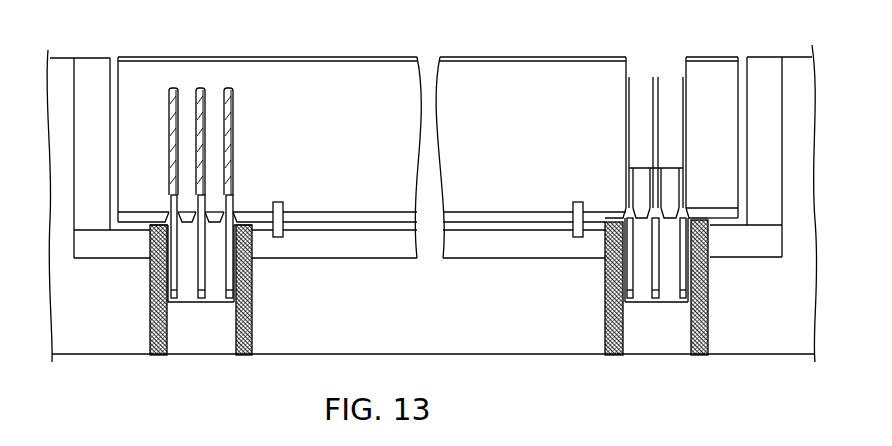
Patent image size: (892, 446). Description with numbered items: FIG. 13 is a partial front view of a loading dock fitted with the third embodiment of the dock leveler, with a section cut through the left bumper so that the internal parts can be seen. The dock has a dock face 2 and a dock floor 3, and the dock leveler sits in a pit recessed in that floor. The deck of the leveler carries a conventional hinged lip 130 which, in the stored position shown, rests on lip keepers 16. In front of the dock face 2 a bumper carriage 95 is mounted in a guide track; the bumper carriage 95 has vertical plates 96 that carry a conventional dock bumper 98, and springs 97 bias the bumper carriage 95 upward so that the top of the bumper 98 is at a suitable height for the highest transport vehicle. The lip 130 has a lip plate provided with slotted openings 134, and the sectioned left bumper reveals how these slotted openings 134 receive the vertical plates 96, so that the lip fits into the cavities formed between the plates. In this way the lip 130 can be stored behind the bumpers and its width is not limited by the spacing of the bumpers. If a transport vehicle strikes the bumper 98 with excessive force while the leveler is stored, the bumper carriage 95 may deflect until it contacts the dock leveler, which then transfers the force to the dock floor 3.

The dock face 2 is at (540, 352).
The dock floor 3 is at (58, 58).
The lip keepers 16 is at (282, 240).
The bumper carriage 95 is at (193, 305).
The vertical plates 96 is at (205, 293).
The springs 97 is at (252, 325).
The dock bumper 98 is at (650, 60).
The lip 130 is at (330, 70).
The slotted openings 134 is at (233, 108).